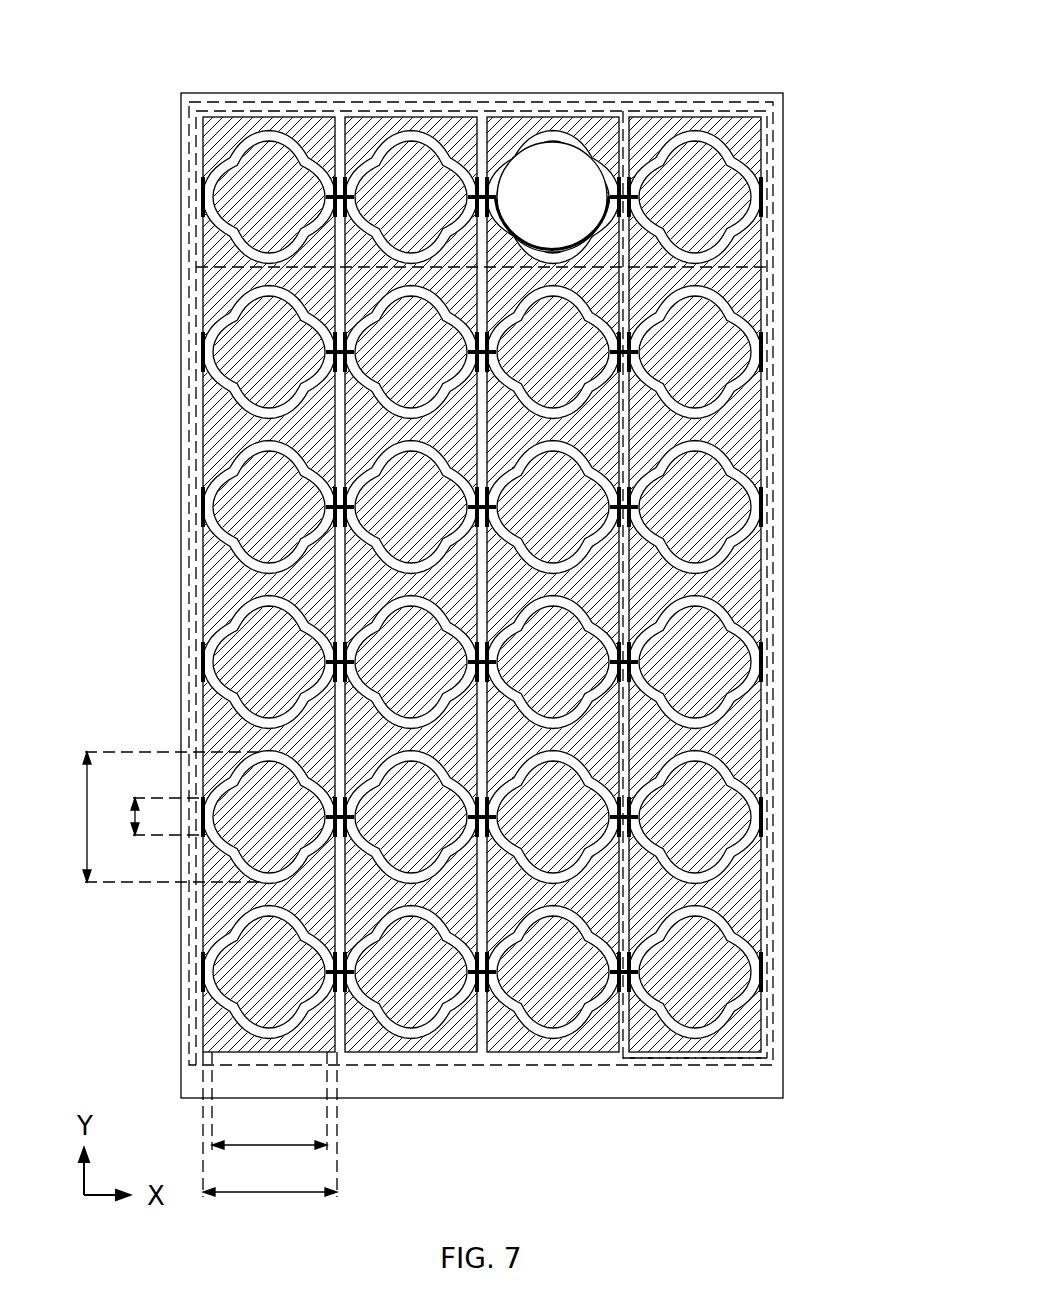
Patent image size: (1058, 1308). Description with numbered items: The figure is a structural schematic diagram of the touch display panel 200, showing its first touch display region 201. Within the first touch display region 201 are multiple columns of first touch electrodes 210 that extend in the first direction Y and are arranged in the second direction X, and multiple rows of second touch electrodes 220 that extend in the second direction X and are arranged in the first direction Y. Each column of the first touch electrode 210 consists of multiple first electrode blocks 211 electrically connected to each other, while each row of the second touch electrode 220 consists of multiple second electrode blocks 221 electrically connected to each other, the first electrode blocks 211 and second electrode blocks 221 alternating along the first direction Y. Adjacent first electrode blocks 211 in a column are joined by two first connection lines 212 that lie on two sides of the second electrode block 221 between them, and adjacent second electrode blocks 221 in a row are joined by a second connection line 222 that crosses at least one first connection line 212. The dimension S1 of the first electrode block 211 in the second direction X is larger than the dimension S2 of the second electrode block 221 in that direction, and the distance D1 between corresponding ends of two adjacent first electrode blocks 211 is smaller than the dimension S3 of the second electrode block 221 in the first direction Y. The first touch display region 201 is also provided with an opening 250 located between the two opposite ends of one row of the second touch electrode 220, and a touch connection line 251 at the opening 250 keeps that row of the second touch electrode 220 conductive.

The touch display panel 200 is at (507, 1200).
The first touch display region 201 is at (190, 585).
The first touch electrode 210 is at (693, 1057).
The first electrode block 211 is at (759, 893).
The first connection line 212 is at (760, 813).
The second touch electrode 220 is at (195, 198).
The second electrode block 221 is at (270, 137).
The second connection line 222 is at (336, 177).
The opening 250 is at (552, 197).
The touch connection line 251 is at (594, 190).
The dimension of the first electrode block in the second direction S1 is at (270, 1124).
The dimension of the second electrode block in the second direction S2 is at (269, 1101).
The dimension of the second electrode block in the first direction S3 is at (154, 817).
The distance between ends of two adjacent first electrode blocks D1 is at (148, 816).